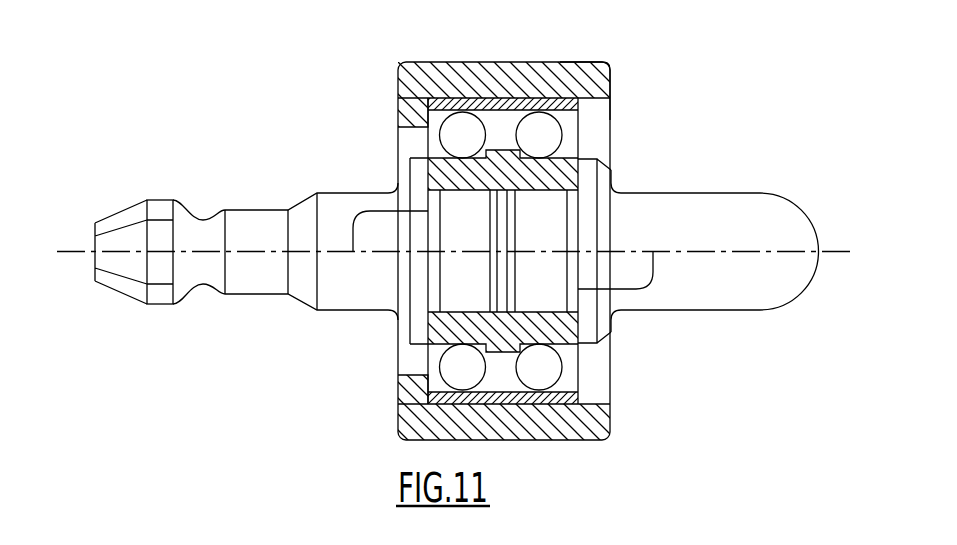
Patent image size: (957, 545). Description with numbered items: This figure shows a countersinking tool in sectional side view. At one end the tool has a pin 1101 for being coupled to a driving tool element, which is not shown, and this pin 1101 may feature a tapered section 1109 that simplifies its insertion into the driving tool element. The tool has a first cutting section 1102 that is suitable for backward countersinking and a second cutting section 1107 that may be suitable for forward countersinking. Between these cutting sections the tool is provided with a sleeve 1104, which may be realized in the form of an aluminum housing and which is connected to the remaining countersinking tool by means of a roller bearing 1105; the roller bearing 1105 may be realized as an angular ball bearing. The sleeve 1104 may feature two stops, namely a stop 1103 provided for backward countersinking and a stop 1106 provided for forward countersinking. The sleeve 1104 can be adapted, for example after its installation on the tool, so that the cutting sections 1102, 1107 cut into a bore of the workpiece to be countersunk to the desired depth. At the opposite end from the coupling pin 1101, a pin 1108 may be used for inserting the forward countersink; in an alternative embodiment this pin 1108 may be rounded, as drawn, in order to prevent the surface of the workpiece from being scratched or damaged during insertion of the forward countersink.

The pin 1101 is at (246, 308).
The first cutting section 1102 is at (378, 174).
The stop 1103 is at (397, 90).
The sleeve 1104 is at (470, 62).
The roller bearing 1105 is at (538, 132).
The stop 1106 is at (613, 78).
The second cutting section 1107 is at (627, 322).
The pin 1108 is at (762, 213).
The tapered section 1109 is at (130, 217).